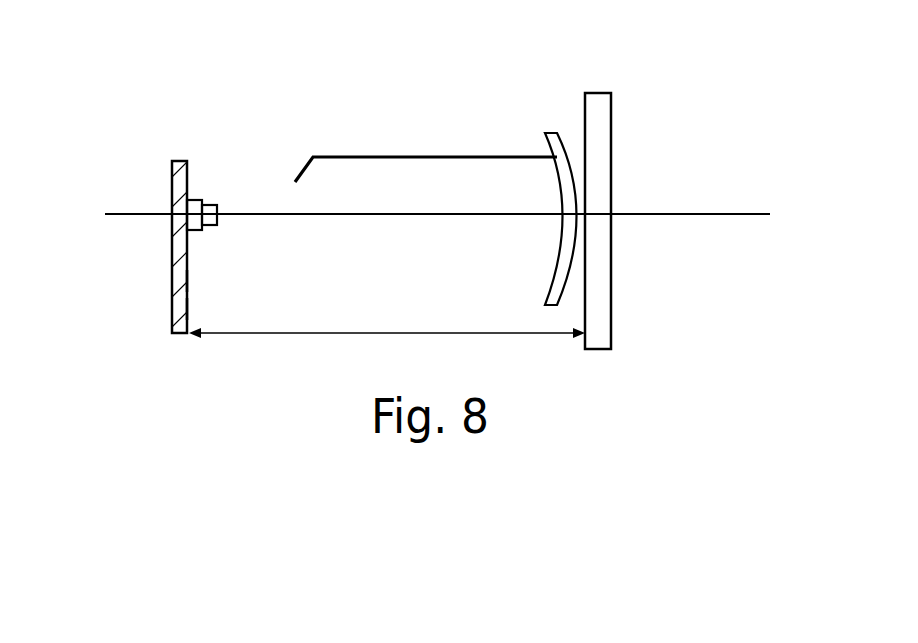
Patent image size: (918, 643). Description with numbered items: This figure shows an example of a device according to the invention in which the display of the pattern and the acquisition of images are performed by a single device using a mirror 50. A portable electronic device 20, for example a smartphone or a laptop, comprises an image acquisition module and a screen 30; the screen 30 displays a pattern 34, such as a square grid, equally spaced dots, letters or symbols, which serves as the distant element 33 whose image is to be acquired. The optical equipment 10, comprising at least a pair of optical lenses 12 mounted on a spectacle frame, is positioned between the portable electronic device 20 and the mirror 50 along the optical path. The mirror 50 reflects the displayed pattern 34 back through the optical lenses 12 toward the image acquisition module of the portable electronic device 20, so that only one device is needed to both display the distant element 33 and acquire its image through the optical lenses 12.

The optical equipment 10 is at (418, 152).
The optical lenses 12 is at (560, 134).
The portable electronic device 20 is at (163, 170).
The screen 30 is at (190, 246).
The distant element 33 is at (186, 309).
The pattern 34 is at (190, 281).
The mirror 50 is at (603, 110).